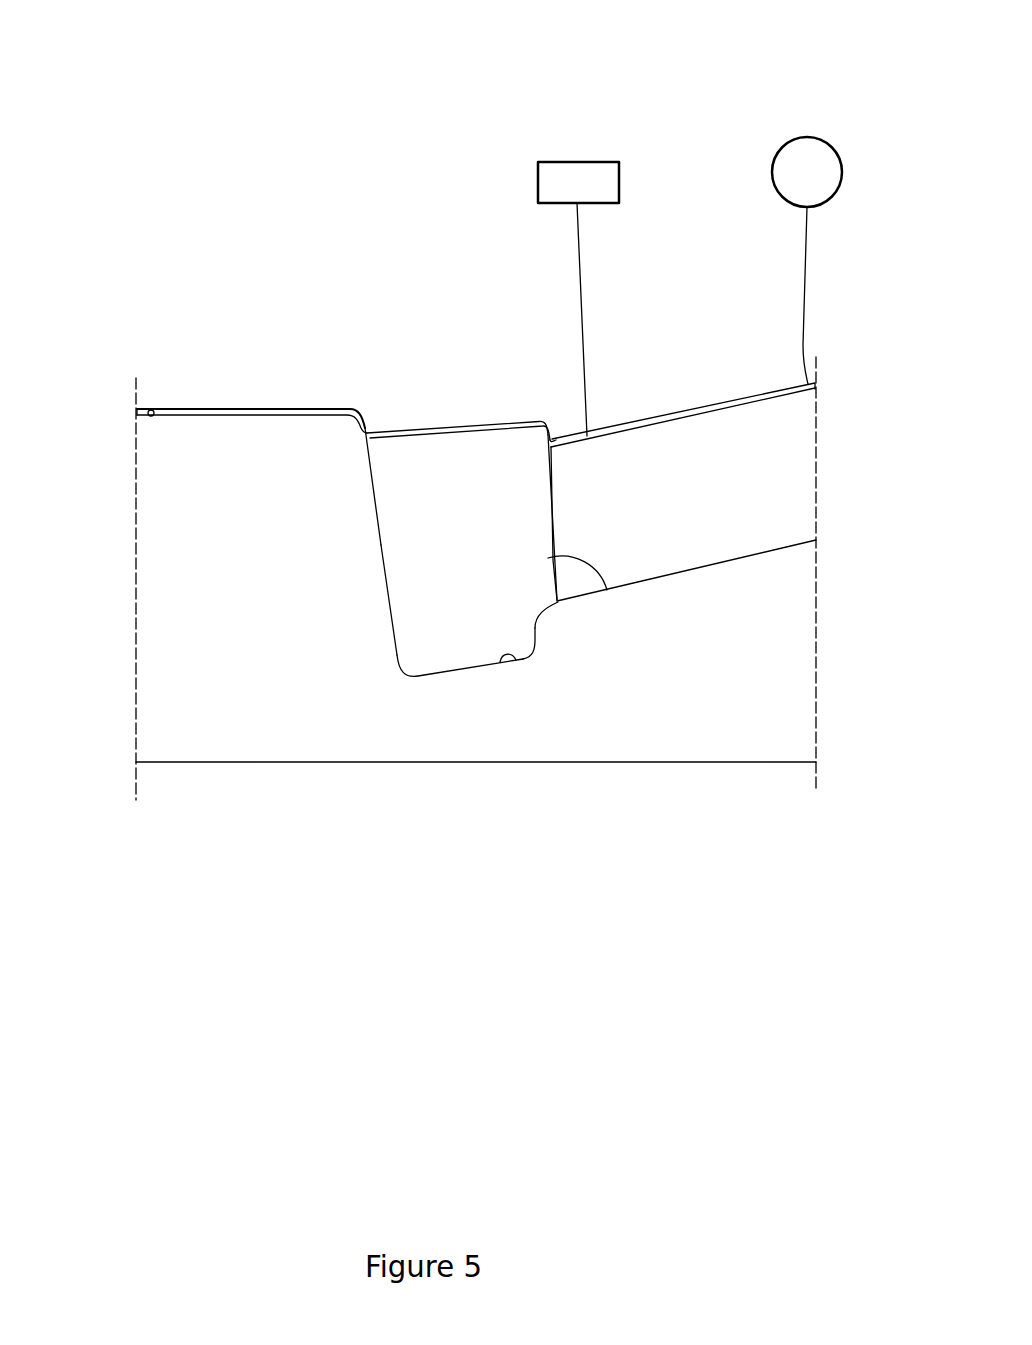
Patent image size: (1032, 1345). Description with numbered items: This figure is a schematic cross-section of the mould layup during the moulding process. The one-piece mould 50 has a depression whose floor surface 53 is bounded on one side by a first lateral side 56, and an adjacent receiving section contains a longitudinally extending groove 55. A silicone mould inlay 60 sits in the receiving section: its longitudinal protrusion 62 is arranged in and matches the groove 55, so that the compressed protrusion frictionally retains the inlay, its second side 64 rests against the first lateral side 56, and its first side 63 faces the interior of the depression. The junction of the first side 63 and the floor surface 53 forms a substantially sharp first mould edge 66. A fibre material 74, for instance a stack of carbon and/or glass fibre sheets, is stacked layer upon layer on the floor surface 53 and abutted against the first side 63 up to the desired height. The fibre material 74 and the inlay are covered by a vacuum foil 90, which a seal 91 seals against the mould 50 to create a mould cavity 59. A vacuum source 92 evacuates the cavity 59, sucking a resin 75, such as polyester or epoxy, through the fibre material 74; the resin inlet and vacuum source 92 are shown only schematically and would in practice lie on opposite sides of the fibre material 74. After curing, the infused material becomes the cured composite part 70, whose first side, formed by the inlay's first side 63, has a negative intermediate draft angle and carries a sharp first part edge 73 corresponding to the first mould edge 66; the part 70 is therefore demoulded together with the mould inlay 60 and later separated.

The mould 50 is at (258, 705).
The floor surface 53 is at (748, 555).
The longitudinal groove 55 is at (520, 658).
The first lateral side 56 is at (371, 502).
The mould cavity 59 is at (754, 397).
The mould inlay 60 is at (451, 489).
The longitudinal protrusion 62 is at (452, 668).
The first side 63 is at (552, 489).
The first mould edge 66 is at (557, 600).
The second side 64 is at (380, 572).
The cured composite part 70 is at (672, 494).
The first part edge 73 is at (553, 607).
The fibre material 74 is at (768, 463).
The resin 75 is at (813, 136).
The vacuum foil 90 is at (207, 410).
The seal 91 is at (152, 408).
The vacuum source 92 is at (600, 162).